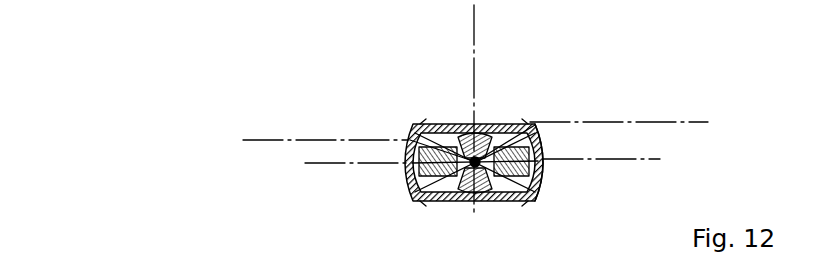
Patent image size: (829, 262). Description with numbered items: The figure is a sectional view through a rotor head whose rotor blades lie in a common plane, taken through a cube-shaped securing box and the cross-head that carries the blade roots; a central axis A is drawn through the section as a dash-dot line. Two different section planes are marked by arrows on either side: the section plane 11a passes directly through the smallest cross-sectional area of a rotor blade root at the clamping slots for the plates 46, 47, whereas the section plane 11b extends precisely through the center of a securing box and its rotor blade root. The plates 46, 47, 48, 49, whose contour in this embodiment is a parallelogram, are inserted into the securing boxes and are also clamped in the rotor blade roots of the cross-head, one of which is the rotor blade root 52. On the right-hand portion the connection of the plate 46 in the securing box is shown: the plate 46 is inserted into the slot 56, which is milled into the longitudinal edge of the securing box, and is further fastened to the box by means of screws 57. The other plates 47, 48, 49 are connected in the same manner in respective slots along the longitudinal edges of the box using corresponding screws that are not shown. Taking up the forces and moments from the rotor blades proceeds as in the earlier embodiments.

The axis A is at (463, 110).
The section plane 11a is at (261, 140).
The section plane 11b is at (316, 163).
The plate 46 is at (504, 125).
The plate 47 is at (430, 125).
The plate 48 is at (503, 202).
The plate 49 is at (450, 202).
The rotor blade root 52 is at (463, 125).
The slot 56 is at (526, 126).
The screws 57 is at (520, 126).